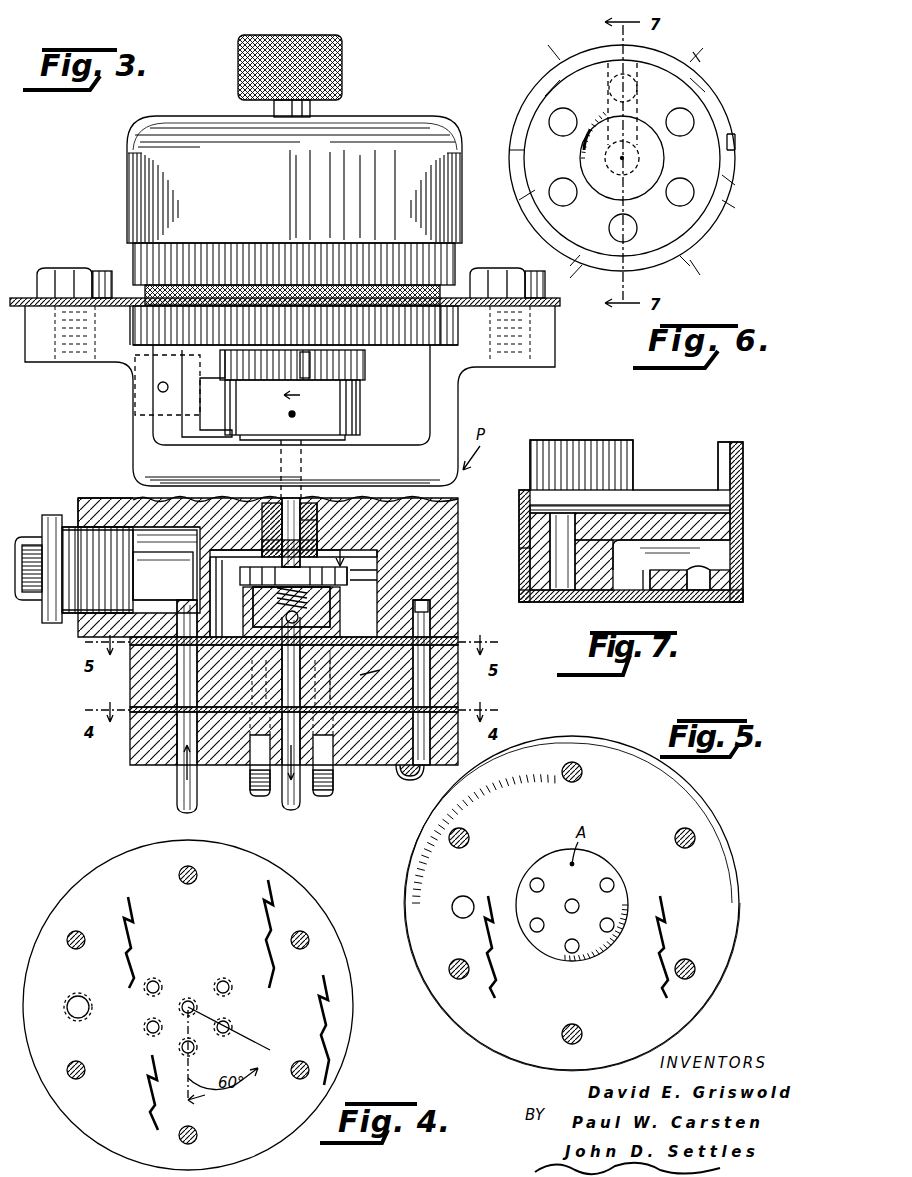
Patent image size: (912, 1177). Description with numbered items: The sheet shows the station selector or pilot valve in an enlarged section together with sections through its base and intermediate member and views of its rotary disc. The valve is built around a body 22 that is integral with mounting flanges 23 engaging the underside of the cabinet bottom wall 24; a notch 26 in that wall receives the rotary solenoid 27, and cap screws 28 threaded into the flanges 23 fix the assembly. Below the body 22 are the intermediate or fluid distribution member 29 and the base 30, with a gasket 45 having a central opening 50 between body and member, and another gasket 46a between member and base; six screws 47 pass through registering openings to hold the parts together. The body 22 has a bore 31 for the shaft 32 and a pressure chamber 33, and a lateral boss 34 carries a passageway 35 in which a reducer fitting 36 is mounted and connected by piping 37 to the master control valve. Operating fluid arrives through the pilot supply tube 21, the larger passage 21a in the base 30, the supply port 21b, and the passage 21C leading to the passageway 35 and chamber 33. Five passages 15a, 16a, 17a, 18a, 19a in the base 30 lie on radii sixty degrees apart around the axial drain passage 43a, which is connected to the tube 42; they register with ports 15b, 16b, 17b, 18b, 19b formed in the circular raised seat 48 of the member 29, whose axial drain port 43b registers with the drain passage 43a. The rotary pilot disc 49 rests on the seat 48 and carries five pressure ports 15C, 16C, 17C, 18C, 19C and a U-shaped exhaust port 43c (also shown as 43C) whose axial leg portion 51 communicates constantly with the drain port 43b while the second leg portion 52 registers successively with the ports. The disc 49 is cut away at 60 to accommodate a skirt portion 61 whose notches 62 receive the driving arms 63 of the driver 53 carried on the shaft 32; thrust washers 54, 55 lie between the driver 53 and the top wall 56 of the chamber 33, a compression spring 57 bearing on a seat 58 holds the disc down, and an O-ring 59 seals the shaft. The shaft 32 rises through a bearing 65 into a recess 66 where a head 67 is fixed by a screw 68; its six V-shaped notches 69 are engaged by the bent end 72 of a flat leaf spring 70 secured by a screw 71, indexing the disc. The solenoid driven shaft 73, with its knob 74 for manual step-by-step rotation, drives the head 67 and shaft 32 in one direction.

In FIG. 3, the knob 74 is at (342, 66).
In FIG. 3, the driven shaft 73 is at (310, 108).
In FIG. 3, the rotary-type solenoid 27 is at (432, 135).
In FIG. 3, the notch 26 is at (435, 282).
In FIG. 3, the bottom wall 24 is at (28, 298).
In FIG. 3, the cap screws 28 is at (70, 268).
In FIG. 3, the flanges 23 is at (35, 362).
In FIG. 3, the recess 66 is at (430, 425).
In FIG. 3, the head 67 is at (360, 400).
In FIG. 3, the screw 68 is at (300, 400).
In FIG. 3, the V-shaped notches 69 is at (250, 350).
In FIG. 3, the bent end 72 is at (308, 352).
In FIG. 3, the flat leaf spring 70 is at (200, 400).
In FIG. 3, the screw 71 is at (135, 383).
In FIG. 3, the shaft 32 is at (301, 470).
In FIG. 3, the body 22 is at (458, 530).
In FIG. 3, the lateral boss 34 is at (100, 498).
In FIG. 3, the passageway 35 is at (150, 527).
In FIG. 3, the pressure chamber 33 is at (350, 550).
In FIG. 3, the reducer fitting 36 is at (52, 515).
In FIG. 3, the piping 37 is at (30, 600).
In FIG. 3, the passage 21C is at (178, 600).
In FIG. 3, the bore 31 is at (282, 505).
In FIG. 3, the bearing 65 is at (310, 520).
In FIG. 3, the O-ring 59 is at (322, 522).
In FIG. 3, the thrust washer 54 is at (262, 540).
In FIG. 3, the thrust washer 55 is at (268, 540).
In FIG. 3, the top wall 56 is at (240, 550).
In FIG. 3, the driver 53 is at (340, 548).
In FIG. 6, the driver 53 is at (703, 66).
In FIG. 3, the compression spring 57 is at (293, 576).
In FIG. 3, the notches 62 is at (240, 572).
In FIG. 6, the notches 62 is at (735, 142).
In FIG. 7, the notches 62 is at (535, 445).
In FIG. 3, the driving arms 63 is at (360, 576).
In FIG. 6, the driving arms 63 is at (525, 80).
In FIG. 3, the skirt portion 61 is at (243, 610).
In FIG. 7, the skirt portion 61 is at (743, 452).
In FIG. 3, the rotary pilot disc 49 is at (330, 610).
In FIG. 6, the rotary pilot disc 49 is at (716, 238).
In FIG. 7, the rotary pilot disc 49 is at (743, 520).
In FIG. 3, the seat 58 is at (286, 620).
In FIG. 6, the seat 58 is at (622, 190).
In FIG. 7, the seat 58 is at (620, 508).
In FIG. 3, the gasket 46a is at (130, 641).
In FIG. 3, the intermediate or fluid distribution member 29 is at (458, 690).
In FIG. 5, the intermediate or fluid distribution member 29 is at (597, 742).
In FIG. 3, the base 30 is at (350, 765).
In FIG. 4, the base 30 is at (294, 877).
In FIG. 3, the pilot supply tube 21 is at (177, 798).
In FIG. 3, the tube 42 is at (291, 812).
In FIG. 3, the gasket 45 is at (430, 620).
In FIG. 3, the screws 47 is at (405, 780).
In FIG. 5, the screws 47 is at (562, 772).
In FIG. 4, the screws 47 is at (197, 875).
In FIG. 3, the supply port 21b is at (177, 675).
In FIG. 5, the supply port 21b is at (467, 896).
In FIG. 3, the U-shaped exhaust port 43c is at (282, 655).
In FIG. 3, the axial drain port 43b is at (282, 690).
In FIG. 5, the axial drain port 43b is at (575, 899).
In FIG. 3, the circular raised seat 48 is at (346, 675).
In FIG. 5, the circular raised seat 48 is at (607, 861).
In FIG. 3, the central opening 50 is at (380, 667).
In FIG. 3, the passage 21a is at (197, 728).
In FIG. 4, the passage 21a is at (82, 997).
In FIG. 3, the drain passage 43a is at (300, 728).
In FIG. 4, the drain passage 43a is at (190, 1000).
In FIG. 6, the axial leg portion 51 is at (635, 160).
In FIG. 7, the axial leg portion 51 is at (645, 590).
In FIG. 6, the second leg portion 52 is at (608, 63).
In FIG. 7, the second leg portion 52 is at (700, 590).
In FIG. 6, the U-shaped exhaust port 43C is at (610, 95).
In FIG. 7, the U-shaped exhaust port 43C is at (650, 545).
In FIG. 6, the pressure port 19C is at (676, 114).
In FIG. 6, the pressure port 18C is at (680, 185).
In FIG. 6, the pressure port 17C is at (636, 226).
In FIG. 7, the pressure port 17C is at (560, 602).
In FIG. 6, the pressure port 16C is at (574, 196).
In FIG. 6, the pressure port 15C is at (560, 134).
In FIG. 7, the cutaway 60 is at (519, 560).
In FIG. 5, the port 15b is at (535, 878).
In FIG. 5, the port 19b is at (613, 882).
In FIG. 5, the port 16b is at (535, 932).
In FIG. 5, the port 18b is at (612, 930).
In FIG. 5, the port 17b is at (575, 953).
In FIG. 4, the passage 15a is at (153, 980).
In FIG. 4, the passage 19a is at (225, 980).
In FIG. 4, the passage 16a is at (147, 1027).
In FIG. 4, the passage 18a is at (230, 1025).
In FIG. 4, the passage 17a is at (195, 1050).